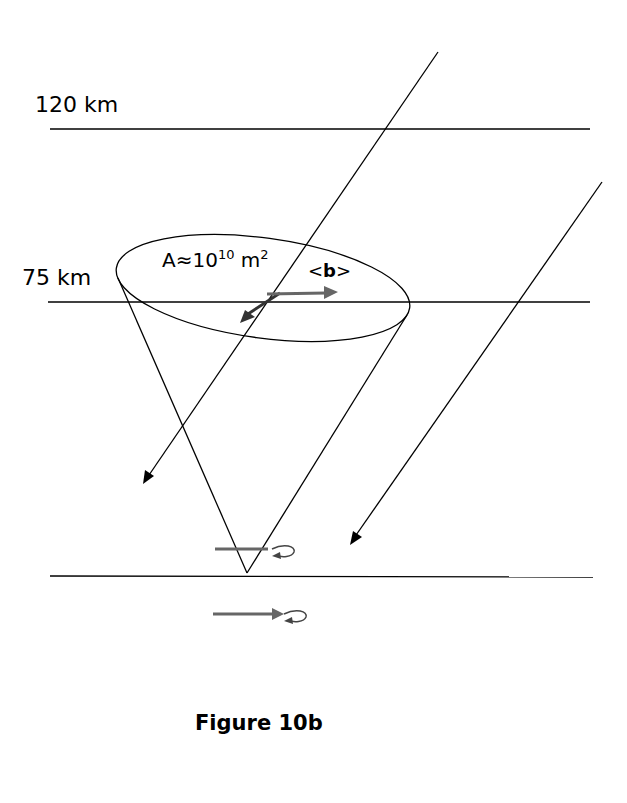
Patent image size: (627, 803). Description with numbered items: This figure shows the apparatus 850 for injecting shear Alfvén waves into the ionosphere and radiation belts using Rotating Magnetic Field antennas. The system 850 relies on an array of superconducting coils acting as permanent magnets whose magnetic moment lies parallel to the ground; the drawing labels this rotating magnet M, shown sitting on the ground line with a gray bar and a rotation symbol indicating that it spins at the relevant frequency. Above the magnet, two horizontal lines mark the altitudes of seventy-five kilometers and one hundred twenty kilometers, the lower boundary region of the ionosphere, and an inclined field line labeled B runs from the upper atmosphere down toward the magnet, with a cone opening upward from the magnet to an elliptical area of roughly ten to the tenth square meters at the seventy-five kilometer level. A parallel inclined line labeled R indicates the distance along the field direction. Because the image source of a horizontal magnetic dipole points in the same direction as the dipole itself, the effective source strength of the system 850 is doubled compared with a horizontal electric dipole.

The apparatus for injecting SAW using Rotating Magnetic Field antennas 850 is at (442, 76).
The magnetic field vector B is at (202, 367).
The range line R is at (444, 363).
The rotating magnet M is at (160, 512).